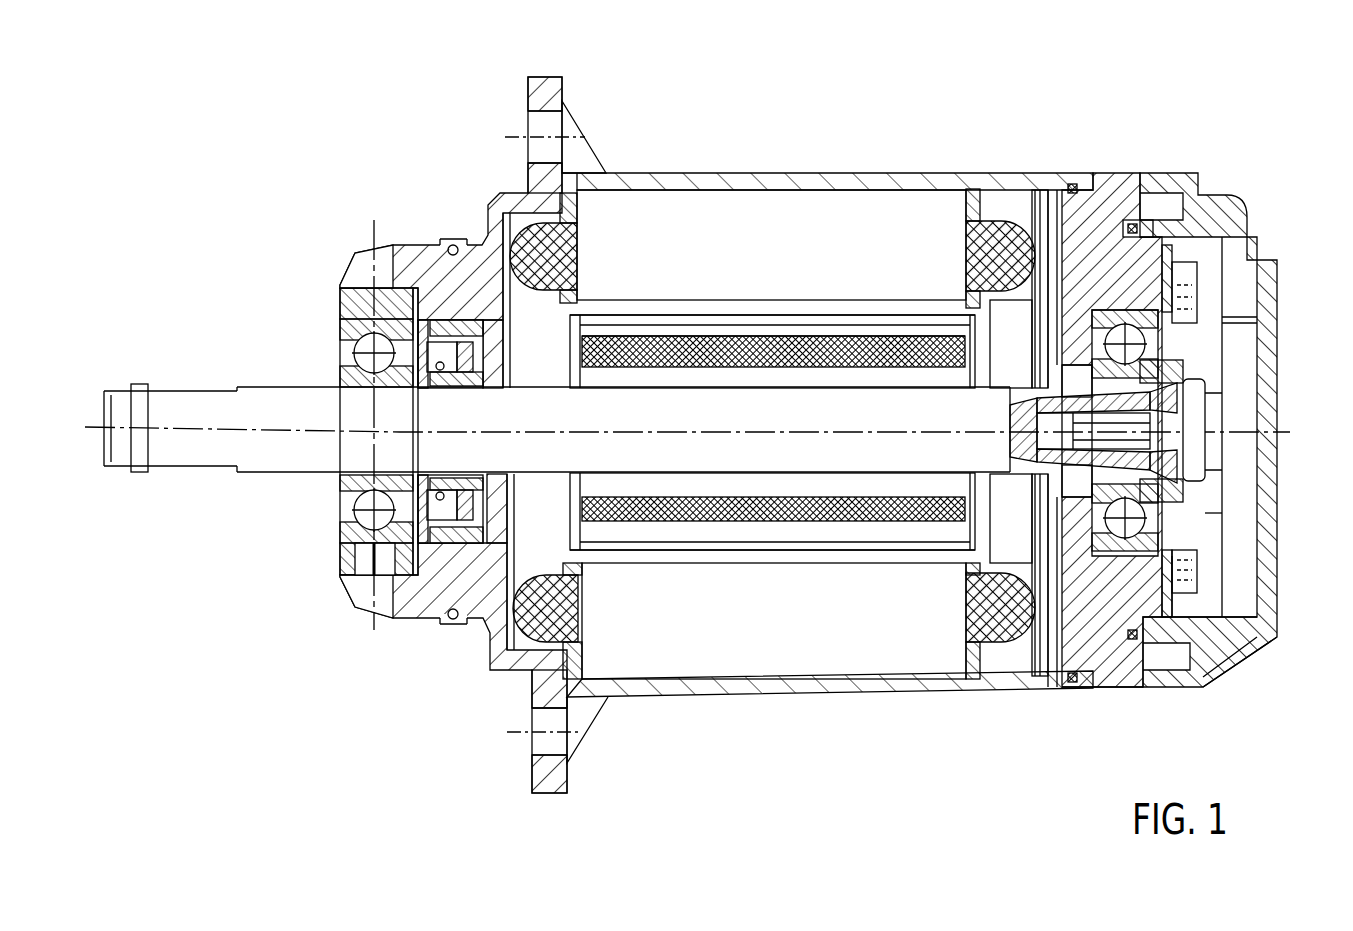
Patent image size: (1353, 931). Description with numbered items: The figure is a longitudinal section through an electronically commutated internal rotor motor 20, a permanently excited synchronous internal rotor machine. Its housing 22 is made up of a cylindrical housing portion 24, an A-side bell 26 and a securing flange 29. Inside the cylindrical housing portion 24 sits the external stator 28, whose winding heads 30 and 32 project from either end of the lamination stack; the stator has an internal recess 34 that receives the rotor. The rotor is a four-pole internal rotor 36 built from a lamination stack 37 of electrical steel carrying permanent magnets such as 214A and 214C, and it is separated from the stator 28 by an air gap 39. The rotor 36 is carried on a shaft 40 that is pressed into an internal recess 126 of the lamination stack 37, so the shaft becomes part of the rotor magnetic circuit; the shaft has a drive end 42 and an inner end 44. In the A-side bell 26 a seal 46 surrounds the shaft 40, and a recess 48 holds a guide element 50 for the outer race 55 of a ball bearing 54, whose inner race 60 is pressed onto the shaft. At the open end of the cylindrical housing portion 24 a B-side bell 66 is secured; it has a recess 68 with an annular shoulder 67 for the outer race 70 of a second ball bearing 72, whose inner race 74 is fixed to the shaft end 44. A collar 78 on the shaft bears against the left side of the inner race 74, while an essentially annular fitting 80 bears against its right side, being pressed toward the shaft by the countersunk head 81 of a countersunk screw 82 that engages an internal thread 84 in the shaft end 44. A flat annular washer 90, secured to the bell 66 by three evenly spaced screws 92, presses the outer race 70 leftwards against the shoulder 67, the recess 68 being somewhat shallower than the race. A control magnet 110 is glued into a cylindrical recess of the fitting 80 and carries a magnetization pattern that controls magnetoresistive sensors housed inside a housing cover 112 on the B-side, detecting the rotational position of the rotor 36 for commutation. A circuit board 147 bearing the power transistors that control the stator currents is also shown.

The electronically commutated internal rotor motor 20 is at (812, 132).
The housing 22 is at (478, 186).
The cylindrical housing portion 24 is at (710, 180).
The A-side bell 26 is at (413, 605).
The external stator 28 is at (759, 255).
The securing flange 29 is at (560, 77).
The winding head 30 is at (540, 291).
The winding head 32 is at (996, 221).
The internal recess 34 is at (616, 313).
The internal rotor 36 is at (831, 368).
The lamination stack 37 is at (660, 541).
The air gap 39 is at (691, 313).
The shaft 40 is at (656, 468).
The drive end 42 is at (175, 404).
The inner end 44 is at (1017, 467).
The seal 46 is at (450, 244).
The recess 48 is at (340, 288).
The guide element 50 is at (340, 298).
The ball bearing 54 is at (322, 508).
The outer race 55 is at (340, 329).
The inner race 60 is at (340, 363).
The B-side bell 66 is at (1115, 190).
The annular shoulder 67 is at (1077, 517).
The recess 68 is at (1122, 670).
The outer race 70 is at (1172, 530).
The ball bearing 72 is at (1205, 513).
The inner race 74 is at (1200, 482).
The collar 78 is at (1062, 375).
The fitting 80 is at (1195, 350).
The countersunk head 81 is at (1224, 404).
The countersunk screw 82 is at (1012, 405).
The internal thread 84 is at (1019, 451).
The annular part or washer 90 is at (1222, 250).
The screw 92 is at (1183, 312).
The control magnet 110 is at (1205, 446).
The housing cover 112 is at (1241, 624).
The internal recess 126 is at (872, 335).
The circuit board 147 is at (1040, 237).
The permanent magnet 214A is at (835, 335).
The permanent magnet 214C is at (828, 522).